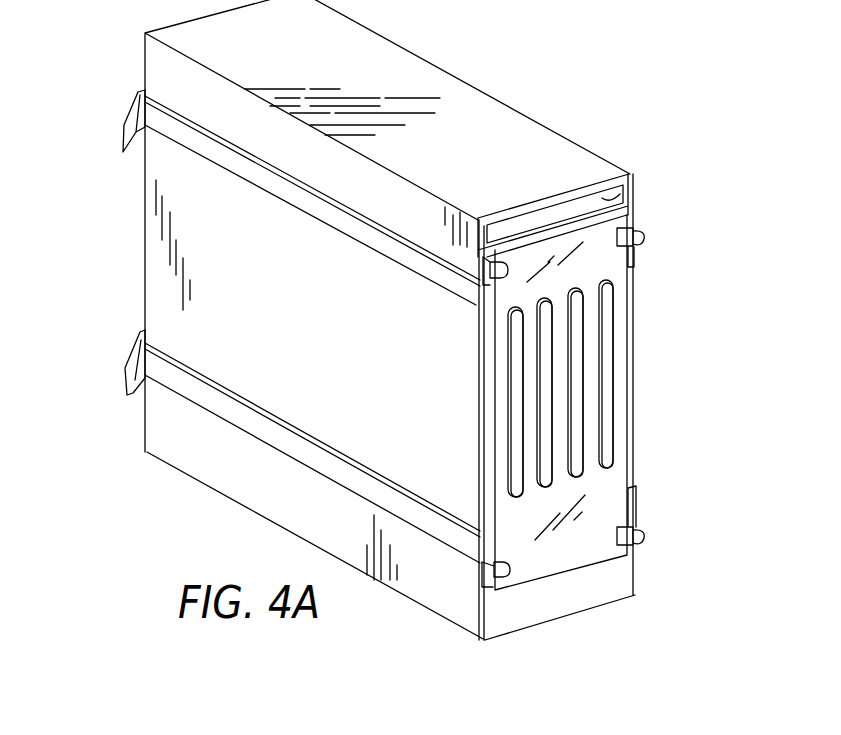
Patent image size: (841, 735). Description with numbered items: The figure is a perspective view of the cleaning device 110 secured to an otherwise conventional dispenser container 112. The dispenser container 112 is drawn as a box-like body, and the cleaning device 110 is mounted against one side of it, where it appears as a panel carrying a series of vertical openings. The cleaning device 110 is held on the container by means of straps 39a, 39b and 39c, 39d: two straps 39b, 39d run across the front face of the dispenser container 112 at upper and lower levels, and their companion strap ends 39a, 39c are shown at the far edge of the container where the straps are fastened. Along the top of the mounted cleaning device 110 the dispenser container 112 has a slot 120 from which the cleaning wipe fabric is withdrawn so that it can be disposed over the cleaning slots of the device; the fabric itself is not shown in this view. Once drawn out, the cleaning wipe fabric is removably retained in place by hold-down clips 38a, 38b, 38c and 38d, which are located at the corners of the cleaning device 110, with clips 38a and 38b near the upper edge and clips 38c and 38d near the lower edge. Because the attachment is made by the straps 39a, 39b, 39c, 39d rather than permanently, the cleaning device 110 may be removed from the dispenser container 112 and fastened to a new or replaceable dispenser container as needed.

The dispenser container 112 is at (505, 100).
The cleaning device 110 is at (619, 355).
The slot 120 is at (630, 198).
The hold-down clip 38a is at (643, 233).
The hold-down clip 38b is at (483, 283).
The hold-down clip 38c is at (643, 532).
The hold-down clip 38d is at (487, 584).
The strap 39a is at (122, 131).
The strap 39b is at (335, 216).
The strap 39c is at (127, 363).
The strap 39d is at (328, 460).